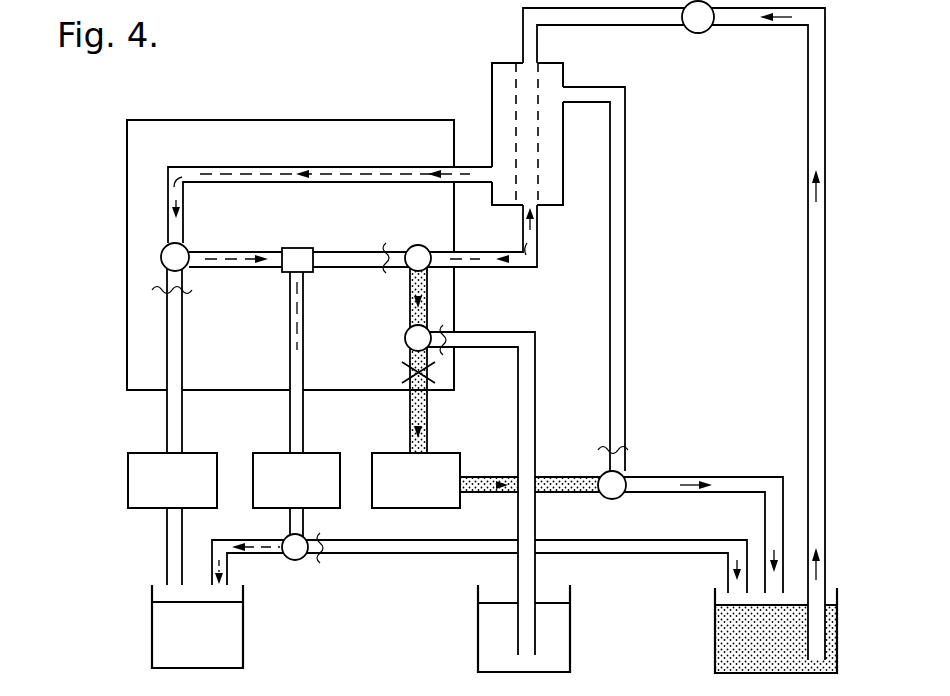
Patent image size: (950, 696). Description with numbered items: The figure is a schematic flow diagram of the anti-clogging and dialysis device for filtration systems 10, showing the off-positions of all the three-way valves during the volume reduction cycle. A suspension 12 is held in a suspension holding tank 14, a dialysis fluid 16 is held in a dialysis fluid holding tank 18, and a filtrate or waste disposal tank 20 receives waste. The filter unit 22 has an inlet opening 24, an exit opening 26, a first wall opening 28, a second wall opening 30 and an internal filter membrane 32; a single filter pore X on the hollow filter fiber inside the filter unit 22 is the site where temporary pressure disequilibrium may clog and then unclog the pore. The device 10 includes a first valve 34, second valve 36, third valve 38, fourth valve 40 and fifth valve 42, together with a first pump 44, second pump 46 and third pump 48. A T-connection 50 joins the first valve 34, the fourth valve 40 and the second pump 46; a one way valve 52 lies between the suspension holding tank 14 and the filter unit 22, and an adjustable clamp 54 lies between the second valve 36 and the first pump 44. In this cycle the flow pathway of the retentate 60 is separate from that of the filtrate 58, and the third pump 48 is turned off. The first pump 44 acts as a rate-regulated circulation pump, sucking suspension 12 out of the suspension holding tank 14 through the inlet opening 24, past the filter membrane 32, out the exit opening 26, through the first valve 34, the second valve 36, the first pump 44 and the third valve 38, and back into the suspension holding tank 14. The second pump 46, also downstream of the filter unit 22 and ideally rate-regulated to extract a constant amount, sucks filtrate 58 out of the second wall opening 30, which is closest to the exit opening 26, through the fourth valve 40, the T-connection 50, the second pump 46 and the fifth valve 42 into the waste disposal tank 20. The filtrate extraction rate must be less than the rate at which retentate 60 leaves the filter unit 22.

The anti-clogging and dialysis device for filtration systems 10 is at (303, 96).
The suspension 12 is at (748, 647).
The suspension holding tank 14 is at (712, 636).
The dialysis fluid 16 is at (550, 651).
The dialysis fluid holding tank 18 is at (478, 632).
The filtrate or waste disposal tank 20 is at (243, 647).
The filter unit 22 is at (547, 79).
The inlet opening 24 is at (522, 55).
The exit opening 26 is at (540, 208).
The first wall opening 28 is at (577, 103).
The second wall opening 30 is at (487, 166).
The internal filter membrane 32 is at (514, 118).
The first valve 34 is at (411, 246).
The second valve 36 is at (405, 337).
The third valve 38 is at (618, 482).
The fourth valve 40 is at (161, 257).
The fifth valve 42 is at (300, 556).
The first pump 44 is at (428, 492).
The second pump 46 is at (310, 492).
The third pump 48 is at (185, 492).
The T-connection 50 is at (309, 252).
The one way valve 52 is at (700, 30).
The adjustable clamp 54 is at (403, 372).
The filtrate 58 is at (441, 168).
The retentate 60 is at (533, 257).
The filter pore X is at (514, 90).